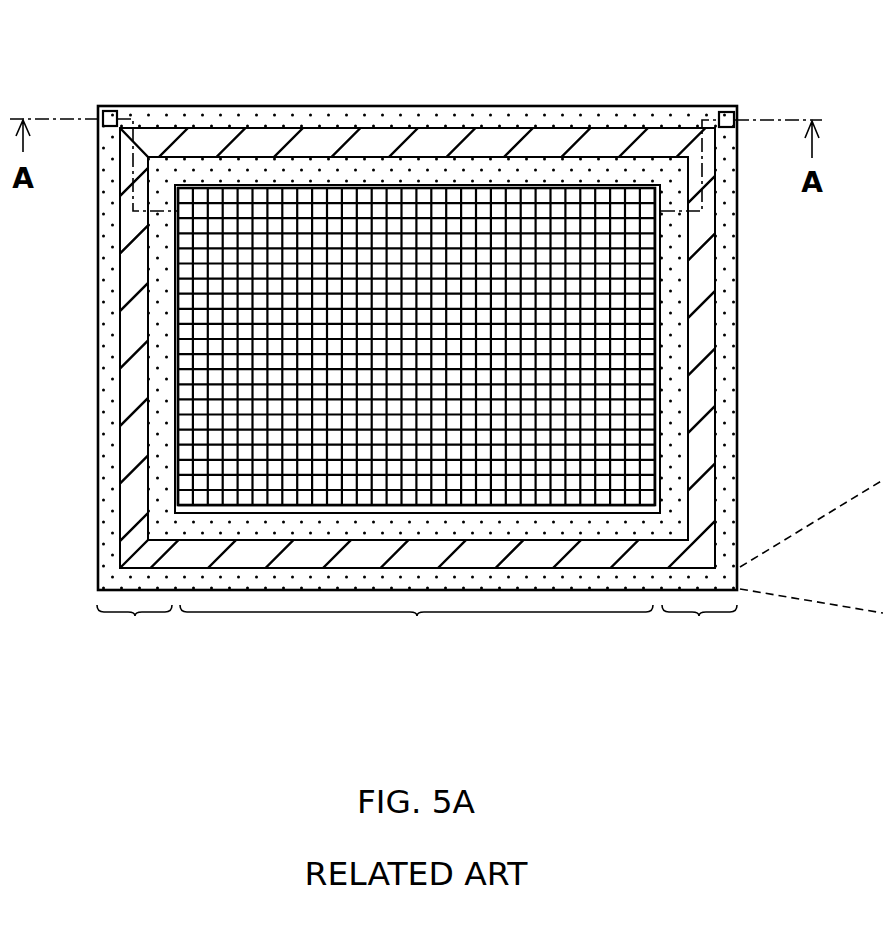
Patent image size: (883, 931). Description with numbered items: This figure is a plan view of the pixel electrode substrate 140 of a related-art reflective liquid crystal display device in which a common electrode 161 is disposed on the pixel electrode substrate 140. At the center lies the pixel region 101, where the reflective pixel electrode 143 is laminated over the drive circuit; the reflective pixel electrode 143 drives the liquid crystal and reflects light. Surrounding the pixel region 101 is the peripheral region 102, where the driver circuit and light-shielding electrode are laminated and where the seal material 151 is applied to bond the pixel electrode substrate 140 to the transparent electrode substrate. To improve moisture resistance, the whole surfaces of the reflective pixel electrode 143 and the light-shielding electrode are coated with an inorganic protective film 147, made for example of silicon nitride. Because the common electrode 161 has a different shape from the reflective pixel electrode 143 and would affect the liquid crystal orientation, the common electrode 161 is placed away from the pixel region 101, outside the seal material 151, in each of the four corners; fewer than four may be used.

The pixel region 101 is at (416, 633).
The peripheral region 102 is at (417, 633).
The pixel electrode substrate 140 is at (643, 108).
The reflective pixel electrode 143 is at (372, 198).
The inorganic protective film 147 is at (672, 340).
The seal material 151 is at (707, 277).
The common electrode 161 is at (734, 113).